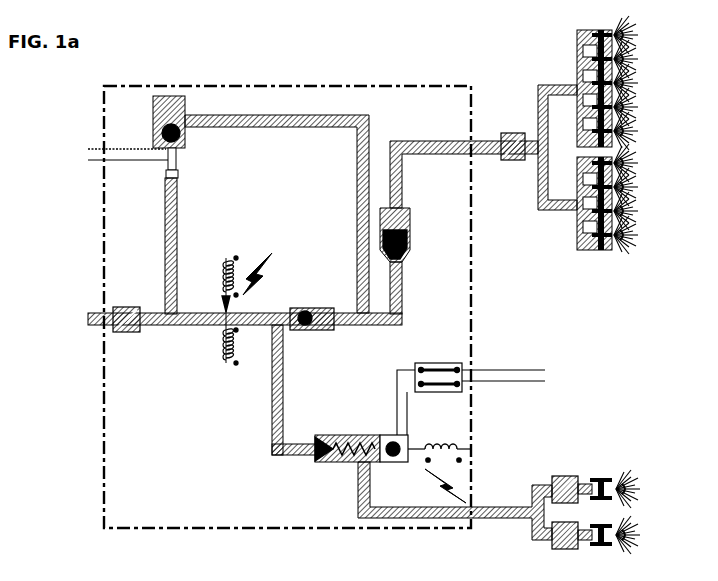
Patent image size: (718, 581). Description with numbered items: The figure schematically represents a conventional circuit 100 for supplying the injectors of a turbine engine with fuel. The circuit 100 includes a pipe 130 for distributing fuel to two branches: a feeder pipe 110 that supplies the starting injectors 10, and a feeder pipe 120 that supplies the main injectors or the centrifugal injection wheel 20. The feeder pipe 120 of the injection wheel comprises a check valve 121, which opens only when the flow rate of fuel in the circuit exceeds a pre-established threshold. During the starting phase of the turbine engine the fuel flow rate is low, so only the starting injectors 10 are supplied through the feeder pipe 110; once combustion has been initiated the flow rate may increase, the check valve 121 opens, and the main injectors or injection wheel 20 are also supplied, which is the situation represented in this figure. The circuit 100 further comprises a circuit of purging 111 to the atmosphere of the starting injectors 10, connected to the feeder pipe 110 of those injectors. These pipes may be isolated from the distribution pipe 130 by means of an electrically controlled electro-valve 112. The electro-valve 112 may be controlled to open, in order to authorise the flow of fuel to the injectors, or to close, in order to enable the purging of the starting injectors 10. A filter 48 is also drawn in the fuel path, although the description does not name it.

The circuit 100 is at (252, 45).
The starting injectors 10 is at (659, 497).
The main injectors or centrifugal injection wheel 20 is at (660, 101).
The fuel filter 48 is at (411, 228).
The feeder pipe 110 is at (506, 520).
The circuit of purging 111 is at (506, 384).
The electro-valve 112 is at (340, 463).
The feeder pipe 120 is at (430, 140).
The check valve 121 is at (313, 333).
The pipe 130 is at (194, 327).